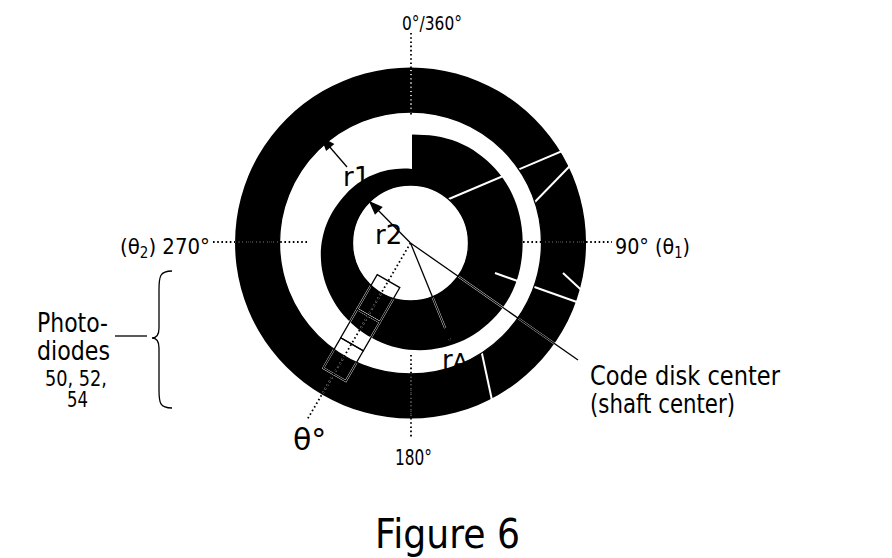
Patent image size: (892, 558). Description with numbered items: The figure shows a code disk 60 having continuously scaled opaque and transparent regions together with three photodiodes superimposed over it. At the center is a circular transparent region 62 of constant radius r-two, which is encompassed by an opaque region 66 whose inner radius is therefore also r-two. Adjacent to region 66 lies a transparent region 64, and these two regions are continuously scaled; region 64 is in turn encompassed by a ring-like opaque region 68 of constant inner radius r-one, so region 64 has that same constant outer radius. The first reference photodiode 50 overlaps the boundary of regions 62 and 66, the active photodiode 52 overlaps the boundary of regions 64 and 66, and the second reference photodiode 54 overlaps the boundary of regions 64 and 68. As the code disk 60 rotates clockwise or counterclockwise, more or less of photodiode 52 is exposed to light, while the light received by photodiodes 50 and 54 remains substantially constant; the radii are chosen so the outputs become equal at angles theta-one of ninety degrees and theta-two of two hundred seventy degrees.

The photodiode (R2) 50 is at (377, 279).
The photodiode (A) 52 is at (350, 326).
The photodiode (R1) 54 is at (323, 368).
The code disk 60 is at (545, 245).
The region (transparent) 62 is at (332, 217).
The region (transparent) 64 is at (377, 142).
The region (opaque) 66 is at (478, 335).
The region (opaque) 68 is at (518, 383).